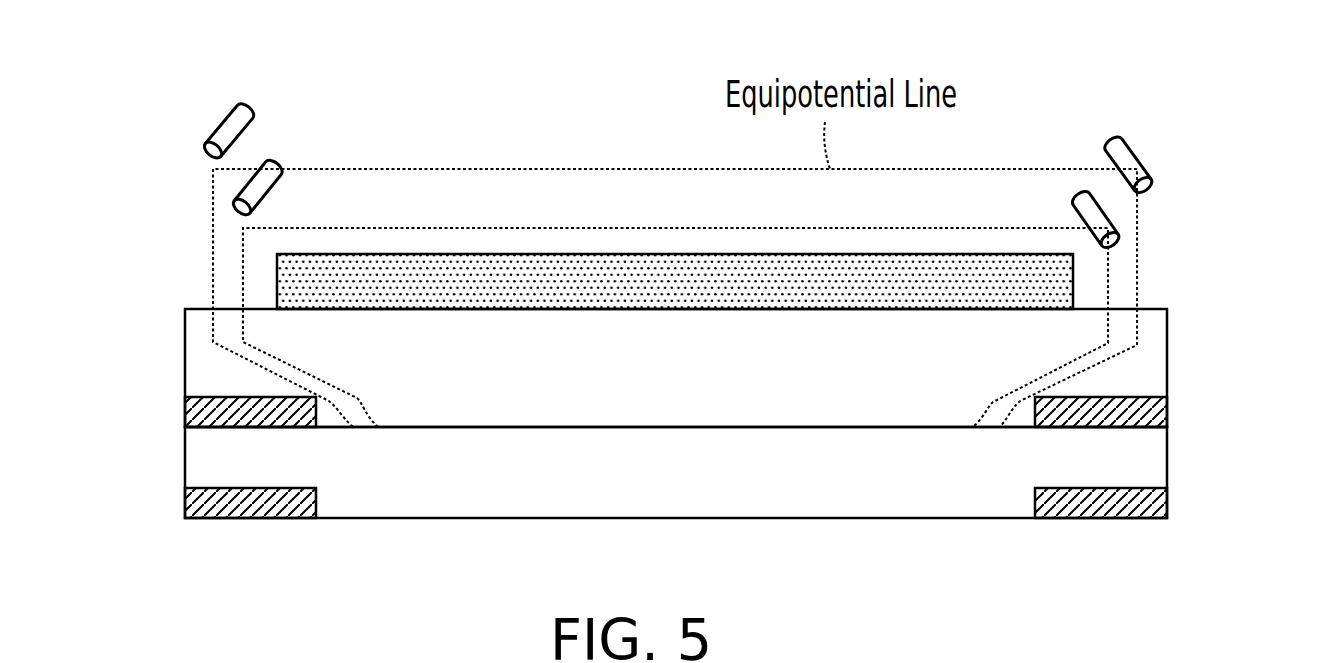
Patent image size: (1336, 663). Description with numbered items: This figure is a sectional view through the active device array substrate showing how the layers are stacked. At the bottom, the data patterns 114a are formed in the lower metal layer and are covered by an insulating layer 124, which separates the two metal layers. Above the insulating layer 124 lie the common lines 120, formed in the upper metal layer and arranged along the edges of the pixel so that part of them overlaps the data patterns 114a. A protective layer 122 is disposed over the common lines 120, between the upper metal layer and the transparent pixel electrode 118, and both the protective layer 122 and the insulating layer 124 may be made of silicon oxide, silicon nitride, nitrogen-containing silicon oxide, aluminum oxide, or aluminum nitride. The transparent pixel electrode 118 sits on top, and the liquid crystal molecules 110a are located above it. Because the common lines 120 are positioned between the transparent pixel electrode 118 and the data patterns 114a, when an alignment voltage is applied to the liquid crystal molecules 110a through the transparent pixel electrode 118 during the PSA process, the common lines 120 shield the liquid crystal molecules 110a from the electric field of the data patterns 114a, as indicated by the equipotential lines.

The liquid crystal molecules 110a is at (1123, 155).
The transparent pixel electrode 118 is at (292, 282).
The common line 120 is at (187, 412).
The protective layer 122 is at (1152, 365).
The insulating layer 124 is at (1152, 457).
The data pattern 114a is at (187, 505).